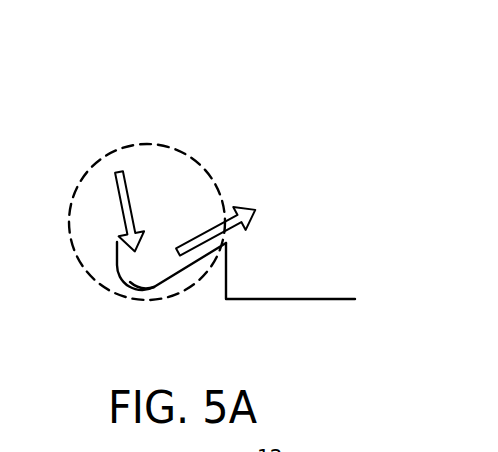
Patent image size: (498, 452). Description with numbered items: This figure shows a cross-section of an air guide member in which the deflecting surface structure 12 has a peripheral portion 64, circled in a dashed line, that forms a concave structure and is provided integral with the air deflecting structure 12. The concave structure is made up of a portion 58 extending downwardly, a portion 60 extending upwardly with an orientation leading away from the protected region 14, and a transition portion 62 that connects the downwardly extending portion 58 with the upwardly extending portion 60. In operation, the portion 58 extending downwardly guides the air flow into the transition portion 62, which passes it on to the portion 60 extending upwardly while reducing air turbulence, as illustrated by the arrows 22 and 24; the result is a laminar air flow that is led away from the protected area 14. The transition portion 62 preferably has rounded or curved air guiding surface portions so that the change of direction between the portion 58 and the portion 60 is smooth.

The deflecting surface structure 12 is at (225, 102).
The protected region 14 is at (338, 276).
The arrow 22 is at (128, 188).
The arrow 24 is at (238, 210).
The portion extending downwardly 58 is at (122, 272).
The portion extending upwardly 60 is at (217, 247).
The transition portion 62 is at (138, 292).
The peripheral portion 64 is at (98, 165).